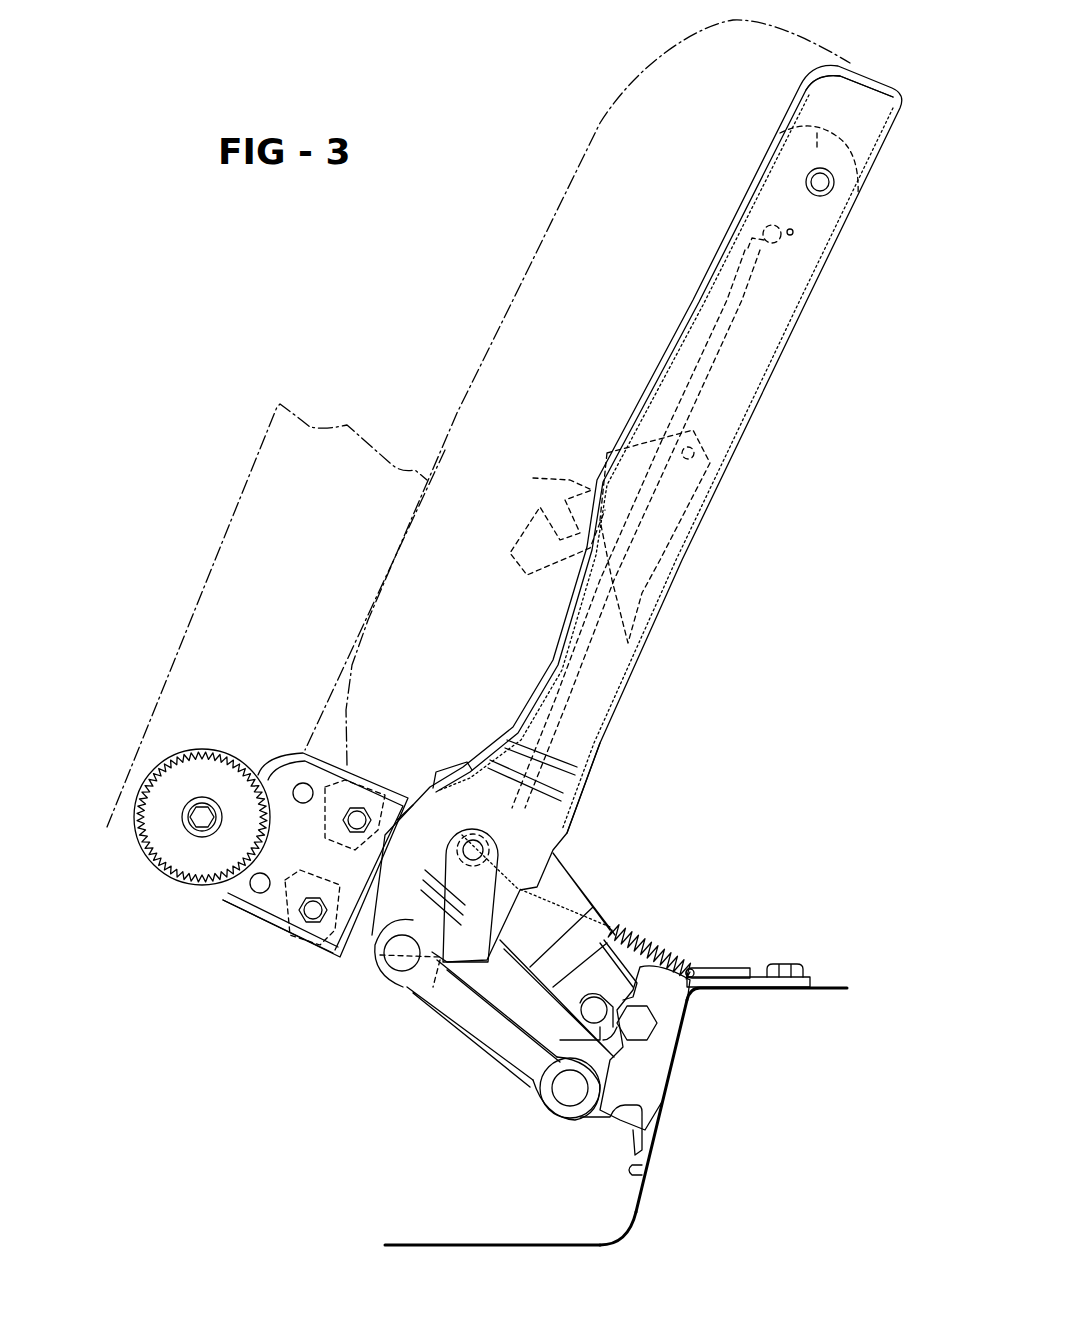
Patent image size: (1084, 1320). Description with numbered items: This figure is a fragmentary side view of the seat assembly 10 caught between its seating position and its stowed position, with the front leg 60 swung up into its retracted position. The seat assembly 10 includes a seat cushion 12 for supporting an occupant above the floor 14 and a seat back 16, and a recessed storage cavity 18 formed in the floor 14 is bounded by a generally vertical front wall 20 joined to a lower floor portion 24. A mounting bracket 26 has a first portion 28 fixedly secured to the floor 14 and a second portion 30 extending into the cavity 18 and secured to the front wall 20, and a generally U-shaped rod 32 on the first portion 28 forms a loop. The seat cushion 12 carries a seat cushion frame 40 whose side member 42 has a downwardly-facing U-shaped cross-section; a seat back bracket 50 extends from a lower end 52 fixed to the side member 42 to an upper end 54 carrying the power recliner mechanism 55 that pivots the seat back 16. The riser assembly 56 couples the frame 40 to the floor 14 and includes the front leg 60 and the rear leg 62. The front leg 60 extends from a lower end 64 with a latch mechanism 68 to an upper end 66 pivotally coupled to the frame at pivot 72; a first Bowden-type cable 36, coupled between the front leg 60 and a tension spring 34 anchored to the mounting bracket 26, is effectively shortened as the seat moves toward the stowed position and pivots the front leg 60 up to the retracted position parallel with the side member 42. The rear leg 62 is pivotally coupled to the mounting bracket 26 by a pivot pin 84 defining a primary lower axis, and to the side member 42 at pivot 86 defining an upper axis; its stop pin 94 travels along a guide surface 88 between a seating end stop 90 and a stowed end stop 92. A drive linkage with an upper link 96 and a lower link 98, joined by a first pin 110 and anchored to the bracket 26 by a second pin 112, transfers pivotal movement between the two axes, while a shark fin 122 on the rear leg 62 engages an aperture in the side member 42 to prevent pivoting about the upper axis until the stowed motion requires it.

The seat assembly 10 is at (447, 240).
The seat cushion 12 is at (597, 120).
The floor 14 is at (835, 985).
The seat back 16 is at (250, 468).
The recessed storage cavity 18 is at (637, 1182).
The front wall 20 is at (633, 1203).
The lower floor portion 24 is at (465, 1243).
The mounting bracket 26 is at (805, 975).
The first portion 28 is at (768, 962).
The second portion 30 is at (633, 1133).
The U-shaped rod 32 is at (730, 965).
The tension spring 34 is at (648, 940).
The first Bowden-type cable 36 is at (700, 400).
The seat cushion frame 40 is at (887, 80).
The side member 42 is at (610, 670).
The seat back bracket 50 is at (240, 895).
The lower end 52 is at (320, 940).
The upper end 54 is at (145, 845).
The power recliner mechanism 55 is at (212, 775).
The riser assembly 56 is at (670, 795).
The front leg 60 is at (790, 345).
The rear leg 62 is at (575, 885).
The lower end 64 is at (700, 500).
The upper end 66 is at (822, 138).
The latch mechanism 68 is at (585, 477).
The pivot 72 is at (822, 182).
The pivot pin 84 is at (645, 1035).
The pivot 86 is at (476, 848).
The guide surface 88 is at (623, 993).
The seating end stop 90 is at (680, 1005).
The stowed end stop 92 is at (575, 1040).
The stop pin 94 is at (580, 1003).
The upper link 96 is at (478, 900).
The lower link 98 is at (465, 1040).
The first pin 110 is at (395, 955).
The second pin 112 is at (565, 1090).
The shark fin 122 is at (452, 768).